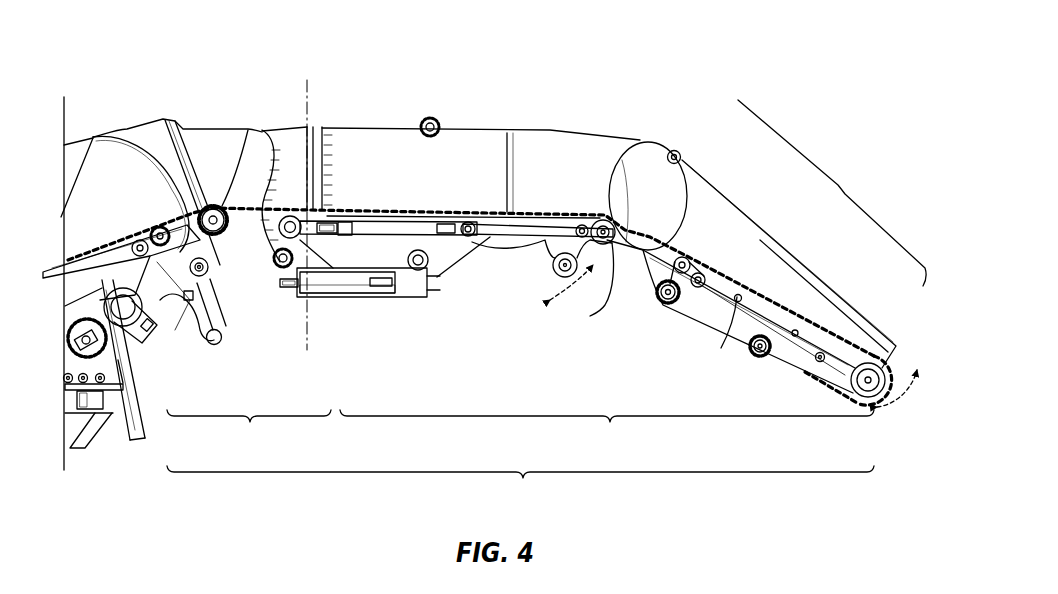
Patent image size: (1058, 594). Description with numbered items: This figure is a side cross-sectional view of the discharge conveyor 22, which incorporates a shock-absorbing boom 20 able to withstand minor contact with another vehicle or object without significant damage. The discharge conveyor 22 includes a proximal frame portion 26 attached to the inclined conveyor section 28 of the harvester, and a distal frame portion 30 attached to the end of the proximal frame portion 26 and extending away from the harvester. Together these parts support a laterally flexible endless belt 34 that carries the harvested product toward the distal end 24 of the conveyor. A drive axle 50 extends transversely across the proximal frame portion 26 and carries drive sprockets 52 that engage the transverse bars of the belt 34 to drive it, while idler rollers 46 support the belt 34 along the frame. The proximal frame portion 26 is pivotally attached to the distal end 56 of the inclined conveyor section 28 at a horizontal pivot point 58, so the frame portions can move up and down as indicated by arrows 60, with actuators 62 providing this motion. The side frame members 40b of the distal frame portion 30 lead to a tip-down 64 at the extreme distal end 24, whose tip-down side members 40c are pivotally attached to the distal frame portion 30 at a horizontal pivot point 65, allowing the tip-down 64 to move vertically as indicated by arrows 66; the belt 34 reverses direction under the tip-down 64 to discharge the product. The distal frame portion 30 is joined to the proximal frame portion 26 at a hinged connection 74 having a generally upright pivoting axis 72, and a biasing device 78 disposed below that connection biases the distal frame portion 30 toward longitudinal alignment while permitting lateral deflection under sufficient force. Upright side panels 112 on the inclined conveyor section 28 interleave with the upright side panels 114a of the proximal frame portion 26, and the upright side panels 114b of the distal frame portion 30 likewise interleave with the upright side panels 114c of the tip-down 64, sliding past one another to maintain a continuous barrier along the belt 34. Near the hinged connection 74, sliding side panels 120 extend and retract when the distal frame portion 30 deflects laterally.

The shock-absorbing boom 20 is at (520, 491).
The discharge conveyor 22 is at (534, 80).
The distal end 24 is at (890, 444).
The proximal frame portion 26 is at (249, 436).
The inclined conveyor section 28 is at (83, 140).
The distal frame portion 30 is at (607, 436).
The endless belt 34 is at (357, 205).
The side frame members of the distal frame portion 40b is at (490, 241).
The tip-down side members 40c is at (808, 352).
The idler rollers 46 is at (656, 294).
The drive axle 50 is at (192, 207).
The drive sprockets 52 is at (220, 205).
The distal end of the inclined conveyor section 56 is at (148, 102).
The horizontal pivot point 58 is at (192, 300).
The arrows 60 is at (570, 294).
The actuators 62 is at (243, 300).
The tip-down 64 is at (840, 186).
The horizontal pivot point 65 is at (682, 154).
The arrows 66 is at (900, 388).
The pivoting axis 72 is at (309, 90).
The hinged connection 74 is at (283, 302).
The biasing device 78 is at (338, 302).
The upright side panels 112 is at (120, 148).
The upright side panels of the proximal frame portion 114a is at (277, 132).
The upright side panels of the distal frame portion 114b is at (628, 150).
The upright side panels of the tip-down 114c is at (838, 294).
The sliding side panels 120 is at (476, 150).